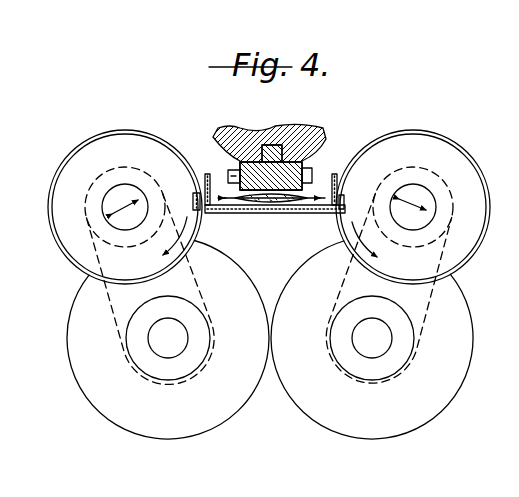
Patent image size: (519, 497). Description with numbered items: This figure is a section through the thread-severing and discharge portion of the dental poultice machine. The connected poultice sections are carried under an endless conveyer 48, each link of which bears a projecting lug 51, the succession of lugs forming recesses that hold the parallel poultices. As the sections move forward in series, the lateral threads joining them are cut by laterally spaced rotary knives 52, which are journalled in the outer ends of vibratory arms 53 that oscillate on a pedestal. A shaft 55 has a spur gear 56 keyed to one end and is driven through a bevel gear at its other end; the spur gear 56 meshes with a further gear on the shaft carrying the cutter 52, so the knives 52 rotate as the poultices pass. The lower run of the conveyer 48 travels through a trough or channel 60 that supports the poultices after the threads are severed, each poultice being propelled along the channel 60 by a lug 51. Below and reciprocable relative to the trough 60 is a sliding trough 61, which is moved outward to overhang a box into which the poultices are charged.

The endless conveyer 48 is at (288, 178).
The projecting lug 51 is at (310, 203).
The rotary knives 52 is at (88, 151).
The vibratory arms 53 is at (98, 263).
The shaft 55 is at (165, 352).
The spur gear 56 is at (241, 399).
The trough or channel 60 is at (200, 188).
The sliding trough 61 is at (255, 214).